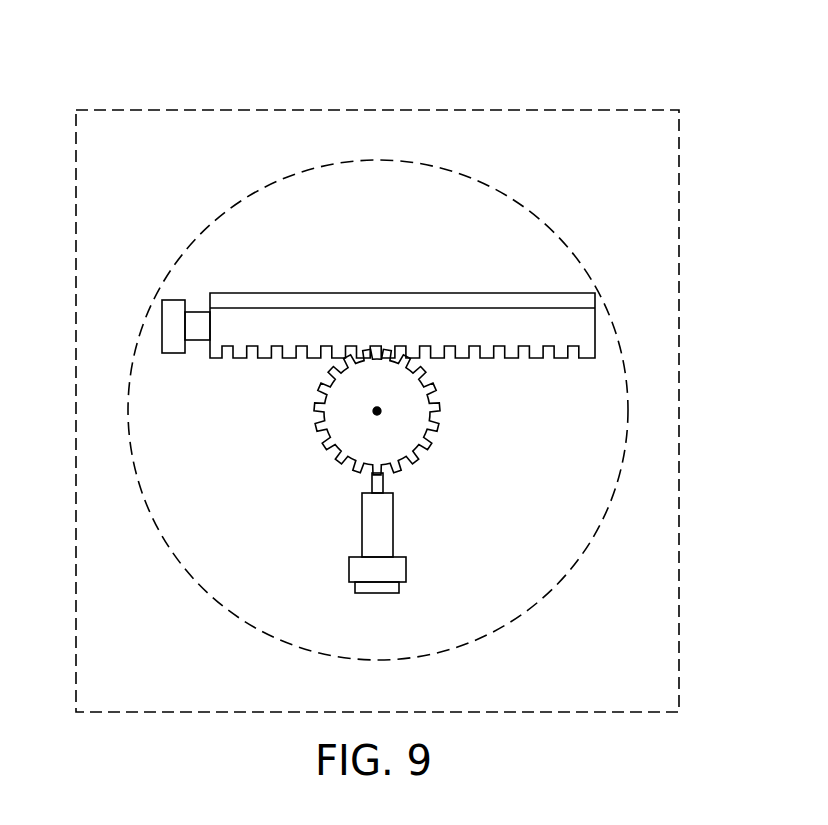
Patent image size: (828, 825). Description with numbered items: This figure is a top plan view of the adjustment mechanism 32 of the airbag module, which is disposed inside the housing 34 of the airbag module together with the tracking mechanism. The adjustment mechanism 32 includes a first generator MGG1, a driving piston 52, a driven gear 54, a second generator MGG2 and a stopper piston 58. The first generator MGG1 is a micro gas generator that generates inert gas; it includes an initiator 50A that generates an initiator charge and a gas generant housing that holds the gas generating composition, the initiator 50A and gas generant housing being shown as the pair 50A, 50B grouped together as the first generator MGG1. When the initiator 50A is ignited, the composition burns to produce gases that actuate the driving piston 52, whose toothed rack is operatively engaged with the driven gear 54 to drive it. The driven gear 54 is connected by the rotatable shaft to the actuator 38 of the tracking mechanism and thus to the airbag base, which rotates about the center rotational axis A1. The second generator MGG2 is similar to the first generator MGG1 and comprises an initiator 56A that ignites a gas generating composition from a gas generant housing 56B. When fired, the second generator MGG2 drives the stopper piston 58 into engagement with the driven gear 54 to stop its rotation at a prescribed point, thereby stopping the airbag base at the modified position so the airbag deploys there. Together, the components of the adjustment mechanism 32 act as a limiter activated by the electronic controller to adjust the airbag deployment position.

The housing 34 is at (213, 110).
The adjustment mechanism 32 is at (449, 228).
The actuator 38 is at (247, 623).
The driving piston 52 is at (481, 293).
The initiator 50A is at (175, 300).
The second gear drive component 50B is at (198, 312).
The first generator MGG1 is at (378, 290).
The driven gear 54 is at (431, 451).
The center rotational axis A1 is at (377, 411).
The stopper piston 58 is at (362, 522).
The gas generant housing 56B is at (406, 569).
The initiator 56A is at (423, 594).
The second generator MGG2 is at (442, 564).